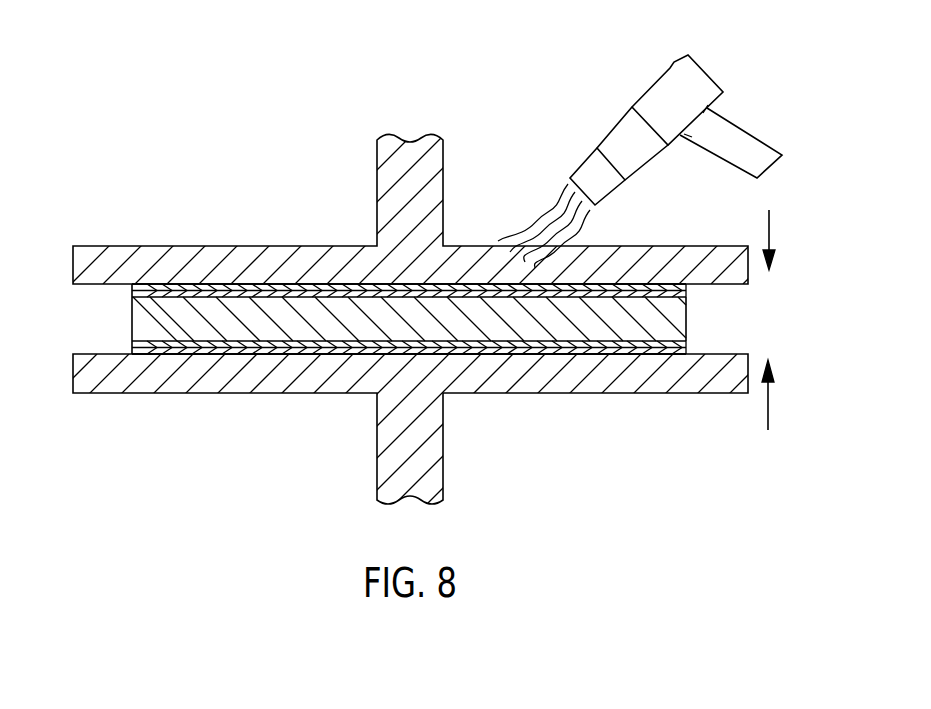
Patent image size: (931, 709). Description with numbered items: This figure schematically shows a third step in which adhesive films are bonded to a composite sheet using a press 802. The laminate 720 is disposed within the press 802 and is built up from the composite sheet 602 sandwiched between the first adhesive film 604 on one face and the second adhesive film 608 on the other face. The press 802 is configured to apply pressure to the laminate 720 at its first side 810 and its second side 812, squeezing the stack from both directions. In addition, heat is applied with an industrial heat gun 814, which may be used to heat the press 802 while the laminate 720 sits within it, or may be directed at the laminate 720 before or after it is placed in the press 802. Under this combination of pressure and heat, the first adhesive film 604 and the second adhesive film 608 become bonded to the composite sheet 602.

The press 802 is at (93, 253).
The laminate 720 is at (123, 290).
The first adhesive film 604 is at (687, 293).
The composite sheet 602 is at (682, 315).
The second adhesive film 608 is at (687, 343).
The first side 810 is at (198, 284).
The second side 812 is at (200, 354).
The industrial heat gun 814 is at (663, 92).